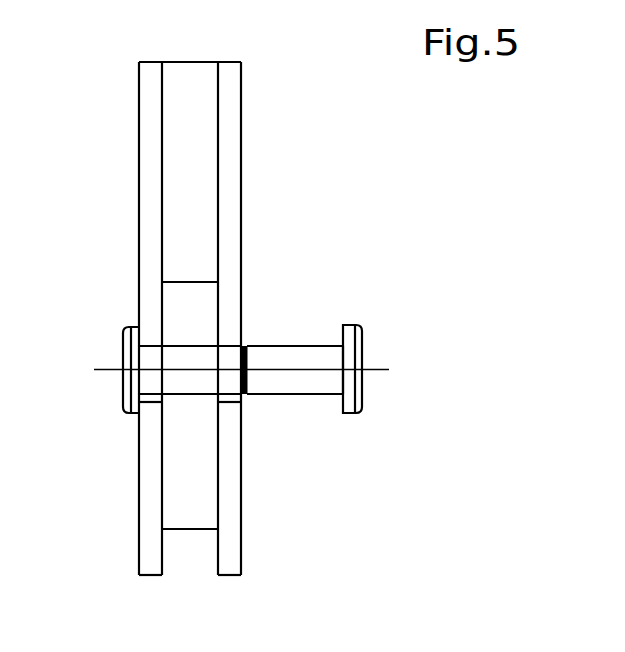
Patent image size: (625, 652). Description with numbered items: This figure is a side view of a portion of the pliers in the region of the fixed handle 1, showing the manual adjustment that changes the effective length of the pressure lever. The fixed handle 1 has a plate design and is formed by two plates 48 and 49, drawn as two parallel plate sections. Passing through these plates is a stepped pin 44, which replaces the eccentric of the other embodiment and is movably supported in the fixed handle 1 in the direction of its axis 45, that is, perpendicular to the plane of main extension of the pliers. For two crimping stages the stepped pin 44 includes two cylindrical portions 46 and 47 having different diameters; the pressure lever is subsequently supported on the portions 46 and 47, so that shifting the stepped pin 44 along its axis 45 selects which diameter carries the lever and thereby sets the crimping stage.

The fixed handle 1 is at (279, 190).
The stepped pin 44 is at (292, 306).
The axis 45 is at (316, 368).
The cylindrical portion 46 is at (195, 380).
The cylindrical portion 47 is at (303, 387).
The plate 48 is at (152, 177).
The plate 49 is at (230, 186).